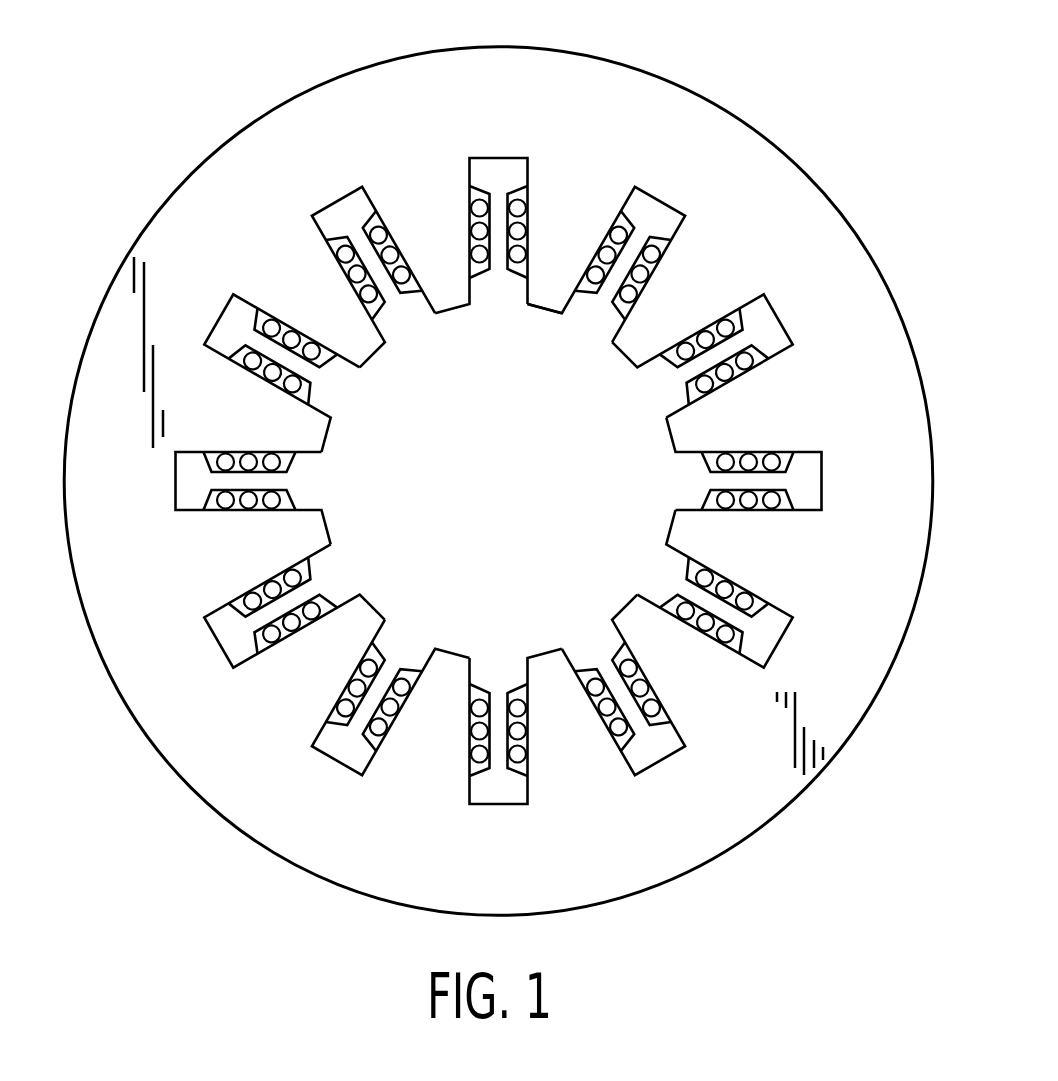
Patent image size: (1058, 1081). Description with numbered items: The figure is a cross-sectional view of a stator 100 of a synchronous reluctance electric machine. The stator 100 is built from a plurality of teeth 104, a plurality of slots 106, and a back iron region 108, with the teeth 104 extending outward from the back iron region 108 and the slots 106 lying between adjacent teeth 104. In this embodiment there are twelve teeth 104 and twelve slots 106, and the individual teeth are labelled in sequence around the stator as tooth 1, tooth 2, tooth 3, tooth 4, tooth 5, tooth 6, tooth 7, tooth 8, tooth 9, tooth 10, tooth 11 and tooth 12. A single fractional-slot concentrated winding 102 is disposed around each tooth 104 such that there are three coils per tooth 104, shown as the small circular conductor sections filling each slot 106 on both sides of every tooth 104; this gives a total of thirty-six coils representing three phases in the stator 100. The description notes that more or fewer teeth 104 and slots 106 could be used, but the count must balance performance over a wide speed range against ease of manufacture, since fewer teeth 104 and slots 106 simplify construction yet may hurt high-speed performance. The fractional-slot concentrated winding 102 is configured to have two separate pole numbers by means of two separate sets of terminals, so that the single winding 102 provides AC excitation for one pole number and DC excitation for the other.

The stator 100 is at (806, 108).
The stator tooth 1 is at (470, 216).
The stator tooth 2 is at (361, 266).
The stator tooth 3 is at (277, 372).
The stator tooth 4 is at (242, 498).
The stator tooth 5 is at (290, 619).
The stator tooth 6 is at (391, 704).
The stator tooth 7 is at (516, 745).
The stator tooth 8 is at (636, 694).
The stator tooth 9 is at (719, 590).
The stator tooth 10 is at (758, 464).
The stator tooth 11 is at (711, 344).
The stator tooth 12 is at (649, 267).
The fractional-slot concentrated winding 102 is at (476, 211).
The tooth 104 is at (553, 288).
The slot 106 is at (666, 222).
The back iron region 108 is at (861, 269).